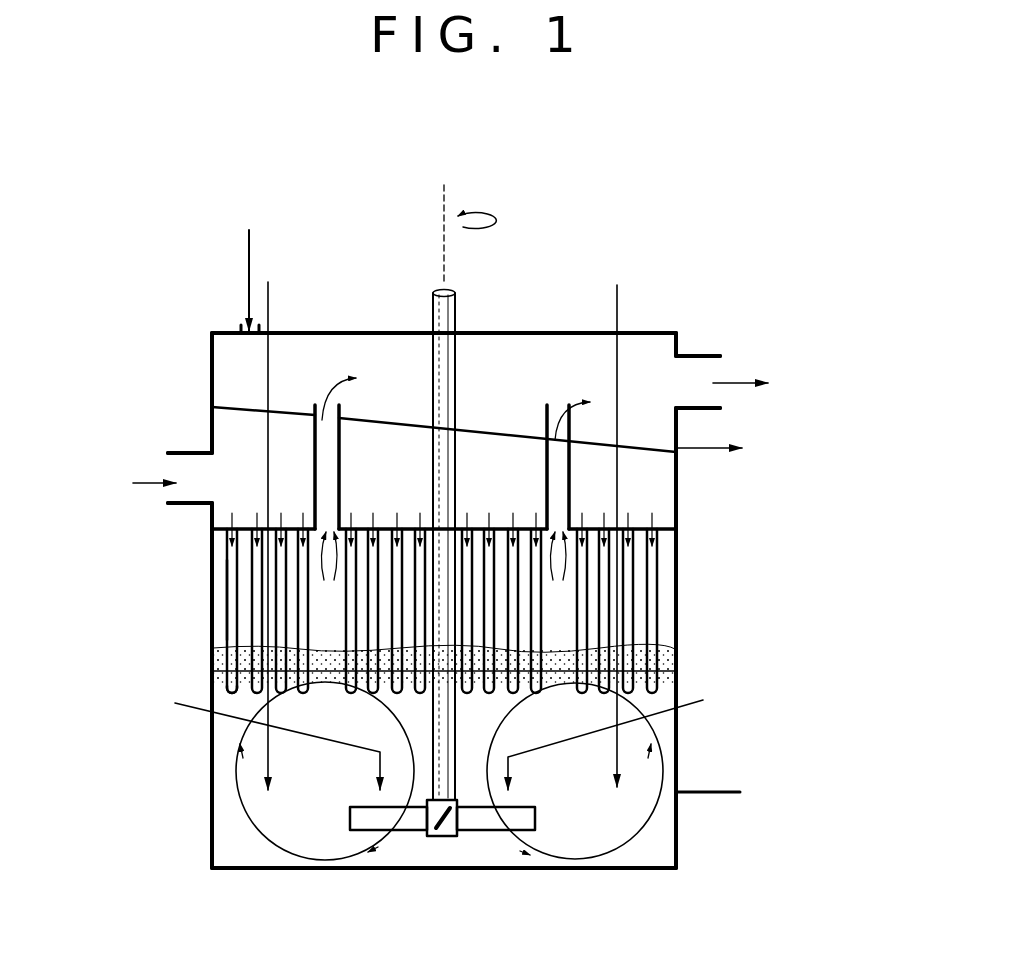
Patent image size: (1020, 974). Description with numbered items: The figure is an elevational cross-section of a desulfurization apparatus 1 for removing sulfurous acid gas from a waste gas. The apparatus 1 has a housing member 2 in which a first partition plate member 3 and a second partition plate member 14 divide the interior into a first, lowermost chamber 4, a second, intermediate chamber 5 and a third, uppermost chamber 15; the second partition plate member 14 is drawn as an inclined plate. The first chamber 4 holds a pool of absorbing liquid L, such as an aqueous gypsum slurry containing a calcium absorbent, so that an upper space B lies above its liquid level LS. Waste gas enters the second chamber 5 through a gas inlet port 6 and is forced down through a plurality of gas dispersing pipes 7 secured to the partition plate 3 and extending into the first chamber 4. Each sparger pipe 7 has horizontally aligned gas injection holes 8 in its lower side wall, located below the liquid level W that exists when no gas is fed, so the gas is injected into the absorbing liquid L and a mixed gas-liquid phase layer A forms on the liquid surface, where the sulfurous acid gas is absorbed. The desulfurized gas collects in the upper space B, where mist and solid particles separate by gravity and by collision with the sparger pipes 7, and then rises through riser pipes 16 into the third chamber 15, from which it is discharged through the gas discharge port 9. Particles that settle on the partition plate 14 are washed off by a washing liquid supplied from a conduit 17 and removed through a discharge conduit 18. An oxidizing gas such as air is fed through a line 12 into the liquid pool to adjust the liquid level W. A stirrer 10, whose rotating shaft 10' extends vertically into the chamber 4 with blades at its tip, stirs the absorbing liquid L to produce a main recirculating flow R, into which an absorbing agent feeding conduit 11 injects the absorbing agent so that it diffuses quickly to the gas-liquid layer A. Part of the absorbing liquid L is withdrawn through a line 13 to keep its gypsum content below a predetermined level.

The desulfurization apparatus 1 is at (546, 296).
The housing member 2 is at (236, 330).
The first partition plate member 3 is at (226, 534).
The first, lowermost chamber 4 is at (226, 796).
The second, intermediate chamber 5 is at (226, 515).
The gas inlet port 6 is at (205, 478).
The gas dispersing pipes 7 is at (228, 610).
The gas injection holes 8 is at (232, 690).
The gas discharge port 9 is at (670, 384).
The stirrer 10 is at (442, 858).
The rotating shaft 10' is at (479, 492).
The absorbing agent feeding conduit 11 is at (175, 703).
The line 12 is at (270, 305).
The line 13 is at (733, 792).
The second partition plate member 14 is at (232, 408).
The third, uppermost chamber 15 is at (222, 355).
The riser pipes 16 is at (314, 480).
The conduit 17 is at (249, 272).
The discharge conduit 18 is at (707, 450).
The mixed gas-liquid phase layer A is at (685, 647).
The upper space B is at (640, 568).
The absorbing liquid L is at (600, 760).
The liquid level LS is at (225, 647).
The main recirculating flow R is at (250, 822).
The liquid level W is at (562, 672).